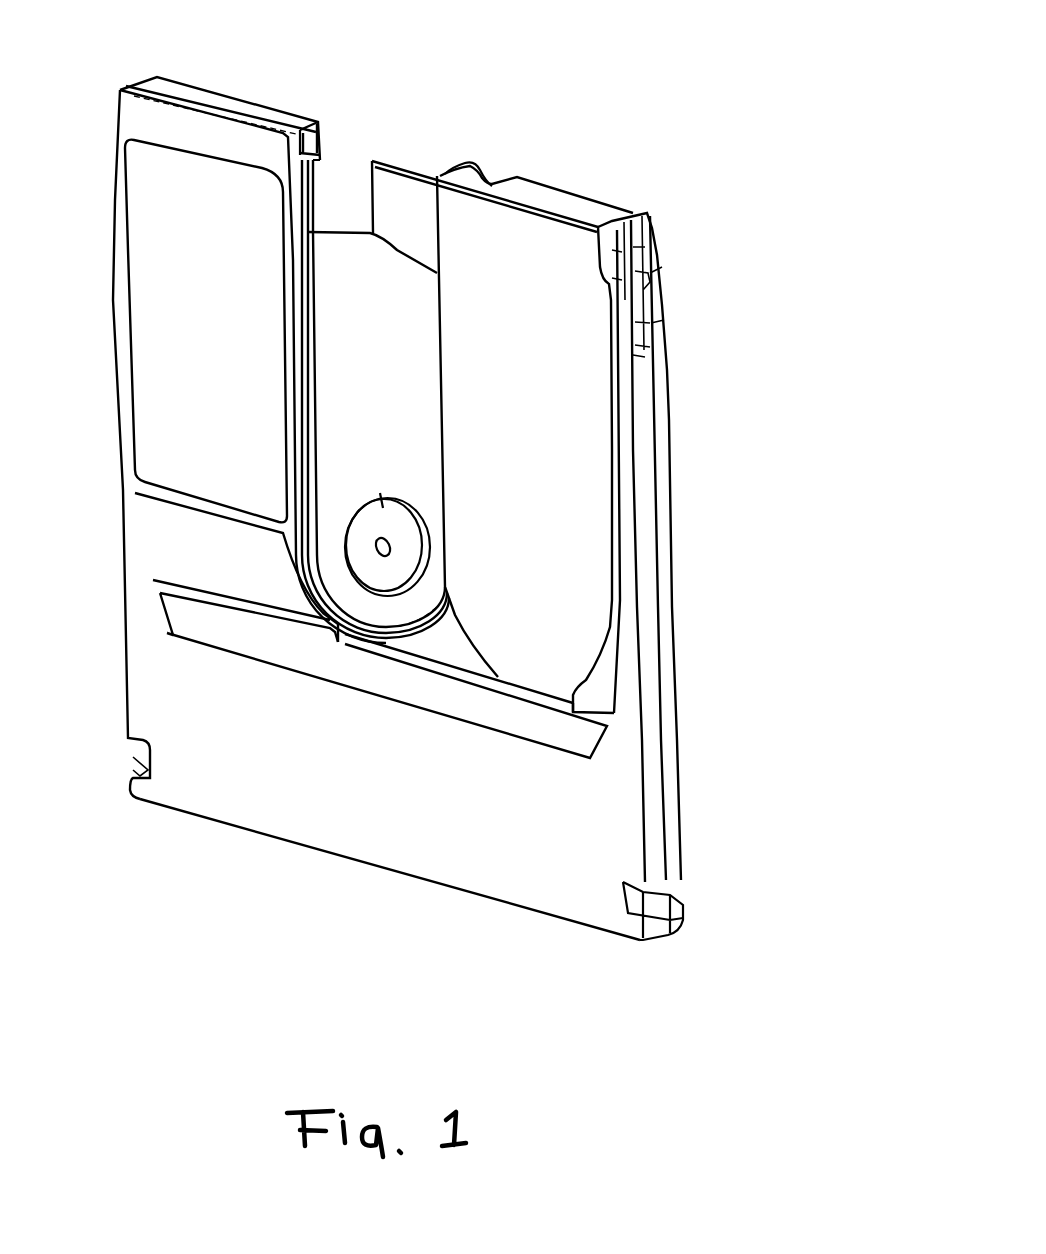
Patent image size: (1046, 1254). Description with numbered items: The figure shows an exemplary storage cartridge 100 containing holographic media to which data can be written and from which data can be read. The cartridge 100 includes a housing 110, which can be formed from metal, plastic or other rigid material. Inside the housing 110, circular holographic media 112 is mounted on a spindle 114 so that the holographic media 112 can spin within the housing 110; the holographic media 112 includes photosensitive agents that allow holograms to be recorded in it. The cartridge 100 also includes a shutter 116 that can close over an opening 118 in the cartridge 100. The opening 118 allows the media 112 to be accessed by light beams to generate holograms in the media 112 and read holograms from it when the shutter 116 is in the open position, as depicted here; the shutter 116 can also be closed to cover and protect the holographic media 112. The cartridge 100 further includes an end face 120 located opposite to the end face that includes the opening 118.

The storage cartridge 100 is at (682, 101).
The housing 110 is at (668, 420).
The holographic media 112 is at (398, 326).
The spindle 114 is at (400, 537).
The shutter 116 is at (586, 213).
The opening 118 is at (317, 148).
The end face 120 is at (548, 915).